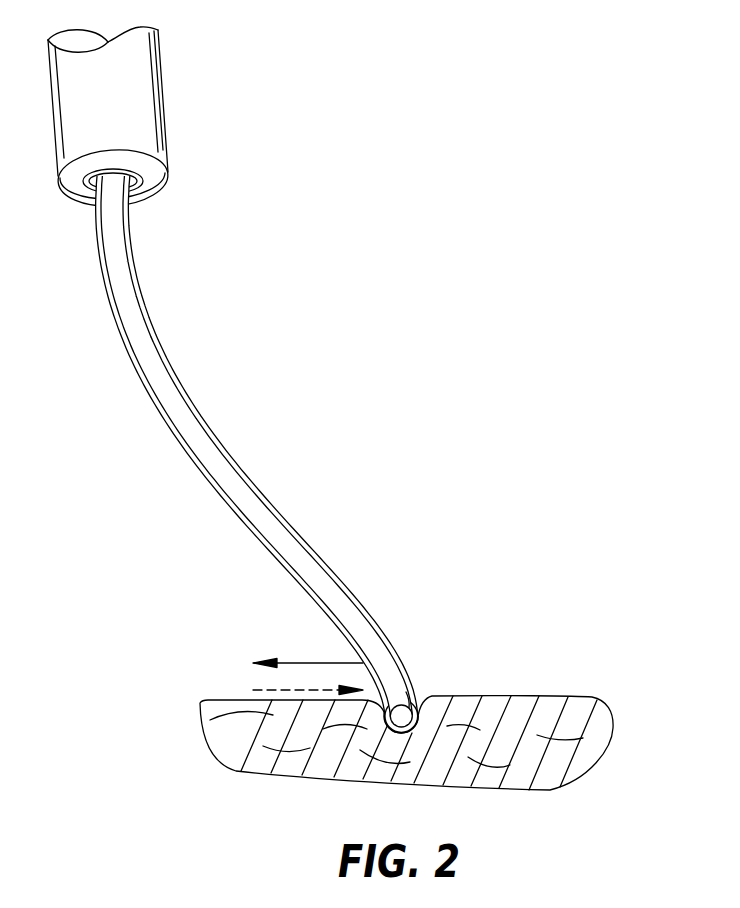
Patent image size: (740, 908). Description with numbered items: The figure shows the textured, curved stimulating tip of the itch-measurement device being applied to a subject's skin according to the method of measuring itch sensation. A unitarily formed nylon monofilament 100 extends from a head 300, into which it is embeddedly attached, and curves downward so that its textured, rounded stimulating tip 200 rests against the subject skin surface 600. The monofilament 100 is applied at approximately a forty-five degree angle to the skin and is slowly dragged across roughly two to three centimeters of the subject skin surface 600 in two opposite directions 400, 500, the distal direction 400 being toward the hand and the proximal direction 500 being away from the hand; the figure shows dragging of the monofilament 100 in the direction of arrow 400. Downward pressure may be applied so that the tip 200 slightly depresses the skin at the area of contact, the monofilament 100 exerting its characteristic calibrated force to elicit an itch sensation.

The monofilament 100 is at (247, 476).
The textured, rounded stimulating tip 200 is at (413, 697).
The head 300 is at (167, 127).
The distal direction 400 is at (320, 658).
The proximal direction 500 is at (320, 688).
The subject skin surface 600 is at (590, 713).